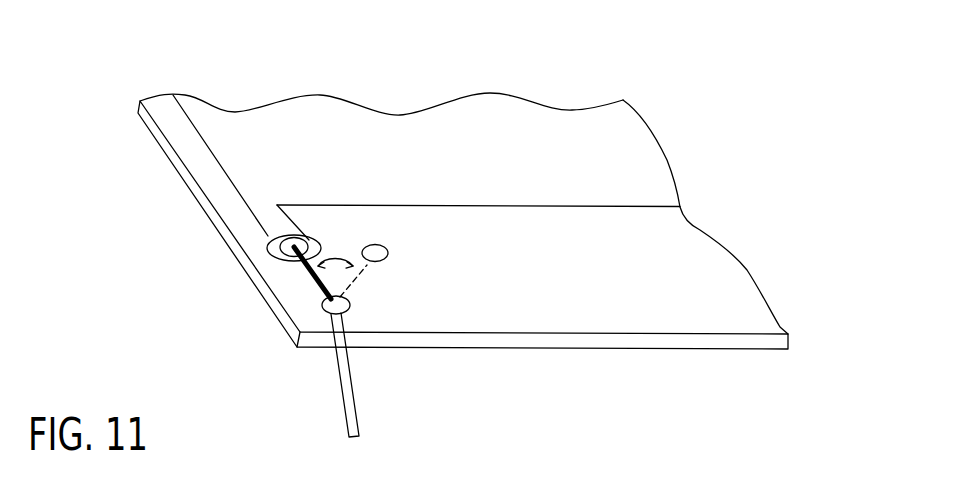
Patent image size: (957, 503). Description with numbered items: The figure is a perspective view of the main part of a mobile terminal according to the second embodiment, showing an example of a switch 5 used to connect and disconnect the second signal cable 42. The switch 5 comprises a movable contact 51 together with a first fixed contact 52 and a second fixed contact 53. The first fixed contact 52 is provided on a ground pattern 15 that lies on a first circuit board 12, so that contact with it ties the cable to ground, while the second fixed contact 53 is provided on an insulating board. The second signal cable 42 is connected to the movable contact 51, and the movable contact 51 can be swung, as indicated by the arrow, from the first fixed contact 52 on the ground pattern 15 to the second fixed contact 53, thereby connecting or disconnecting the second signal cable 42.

The first circuit board 12 is at (572, 324).
The ground pattern 15 is at (433, 125).
The switch 5 is at (276, 272).
The movable contact 51 is at (316, 284).
The first fixed contact 52 is at (270, 237).
The second fixed contact 53 is at (390, 252).
The second signal cable 42 is at (343, 393).